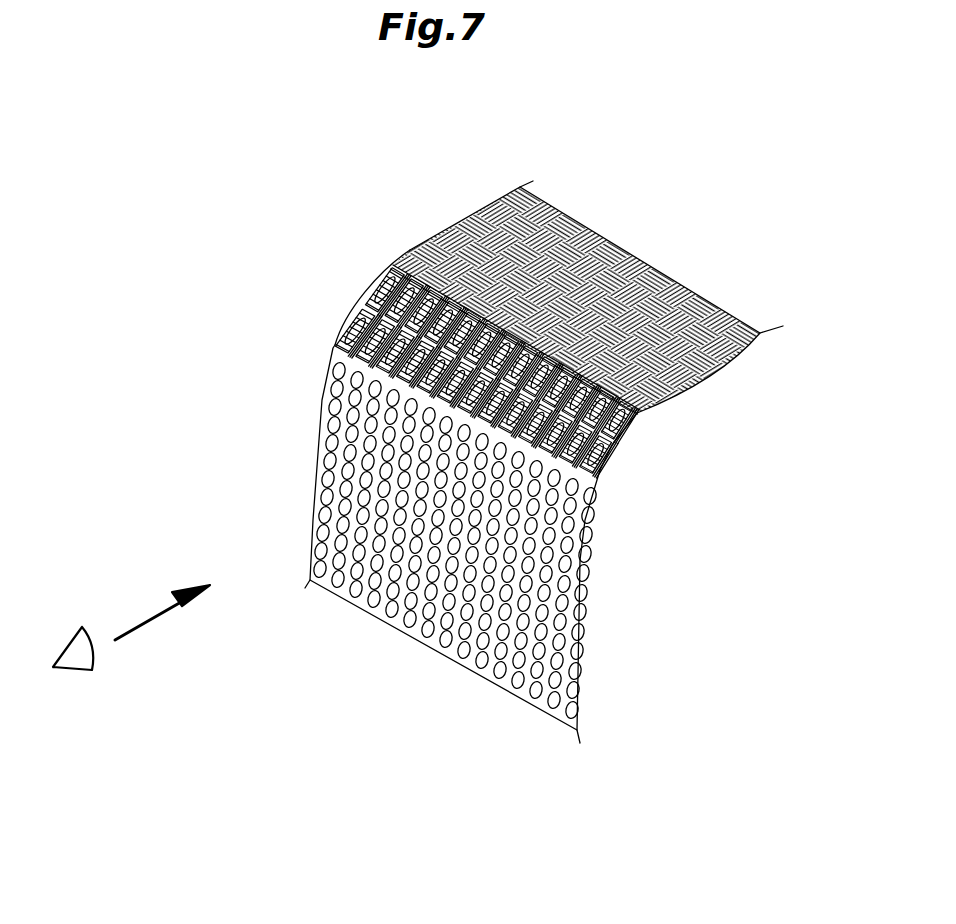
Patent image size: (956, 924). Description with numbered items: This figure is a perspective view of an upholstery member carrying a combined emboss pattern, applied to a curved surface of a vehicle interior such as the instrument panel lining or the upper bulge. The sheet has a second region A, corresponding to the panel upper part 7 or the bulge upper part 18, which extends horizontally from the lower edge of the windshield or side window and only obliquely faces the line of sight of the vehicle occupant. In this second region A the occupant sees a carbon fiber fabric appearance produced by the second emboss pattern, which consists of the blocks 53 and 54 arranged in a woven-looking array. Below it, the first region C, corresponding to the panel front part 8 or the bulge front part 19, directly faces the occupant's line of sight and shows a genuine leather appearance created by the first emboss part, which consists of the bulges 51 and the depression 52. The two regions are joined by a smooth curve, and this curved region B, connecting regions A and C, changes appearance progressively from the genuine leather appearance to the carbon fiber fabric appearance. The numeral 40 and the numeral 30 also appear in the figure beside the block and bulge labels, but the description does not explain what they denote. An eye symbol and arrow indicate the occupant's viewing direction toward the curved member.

The second region A is at (612, 277).
The panel upper part 7 is at (612, 277).
The bulge upper part 18 is at (612, 277).
The intermediate bend region B is at (372, 292).
The first region C is at (452, 556).
The panel front part 8 is at (452, 556).
The bulge front part 19 is at (452, 556).
The block 53 is at (612, 277).
The block 54 is at (612, 277).
The second laminate 40 is at (583, 232).
The bulge 51 is at (452, 556).
The depression 52 is at (452, 556).
The first laminate 30 is at (397, 603).